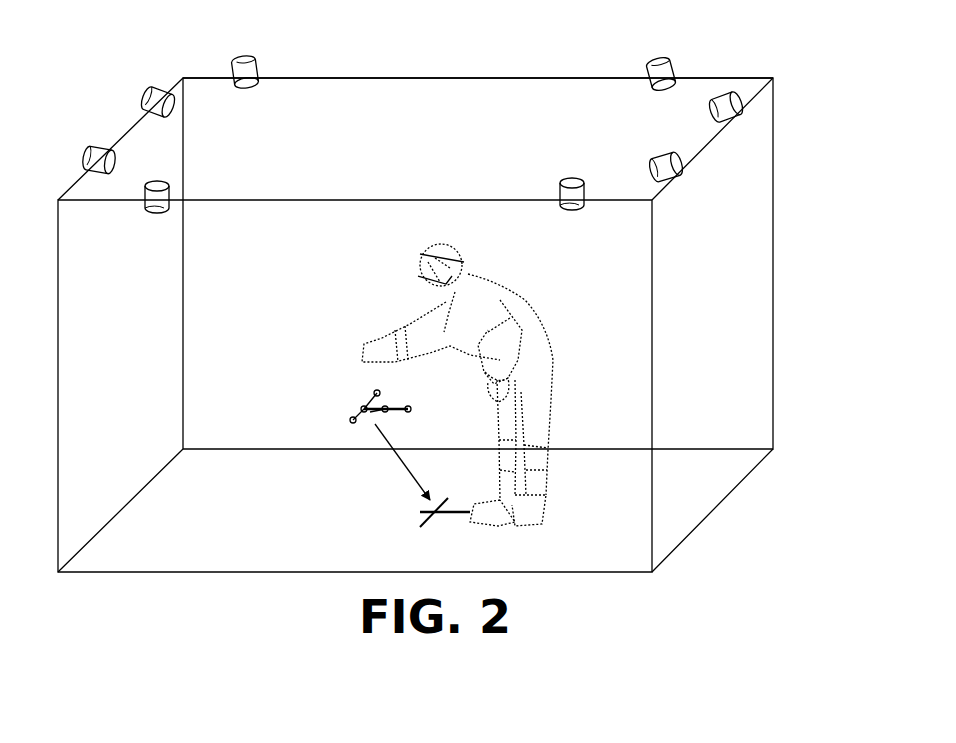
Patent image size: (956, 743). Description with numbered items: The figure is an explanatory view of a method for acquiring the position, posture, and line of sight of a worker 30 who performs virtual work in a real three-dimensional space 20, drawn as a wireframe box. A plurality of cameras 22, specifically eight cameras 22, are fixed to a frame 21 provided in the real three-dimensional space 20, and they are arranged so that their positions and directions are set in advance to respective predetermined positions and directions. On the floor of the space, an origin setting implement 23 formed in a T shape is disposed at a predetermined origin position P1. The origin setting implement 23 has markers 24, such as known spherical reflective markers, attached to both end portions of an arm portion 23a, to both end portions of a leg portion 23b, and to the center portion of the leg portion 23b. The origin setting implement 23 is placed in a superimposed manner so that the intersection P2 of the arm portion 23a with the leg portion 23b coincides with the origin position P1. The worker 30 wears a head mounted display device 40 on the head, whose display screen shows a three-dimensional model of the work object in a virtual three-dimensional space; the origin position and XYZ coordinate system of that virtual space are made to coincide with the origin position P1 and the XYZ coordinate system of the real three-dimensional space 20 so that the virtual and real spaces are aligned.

The real three-dimensional space 20 is at (752, 199).
The frame 21 is at (452, 78).
The camera 22 is at (247, 62).
The origin setting implement 23 is at (387, 406).
The arm portion 23a is at (358, 409).
The leg portion 23b is at (373, 412).
The marker 24 is at (374, 392).
The worker 30 is at (556, 382).
The head mounted display device 40 is at (418, 268).
The origin position P1 is at (443, 517).
The intersection P2 is at (366, 420).